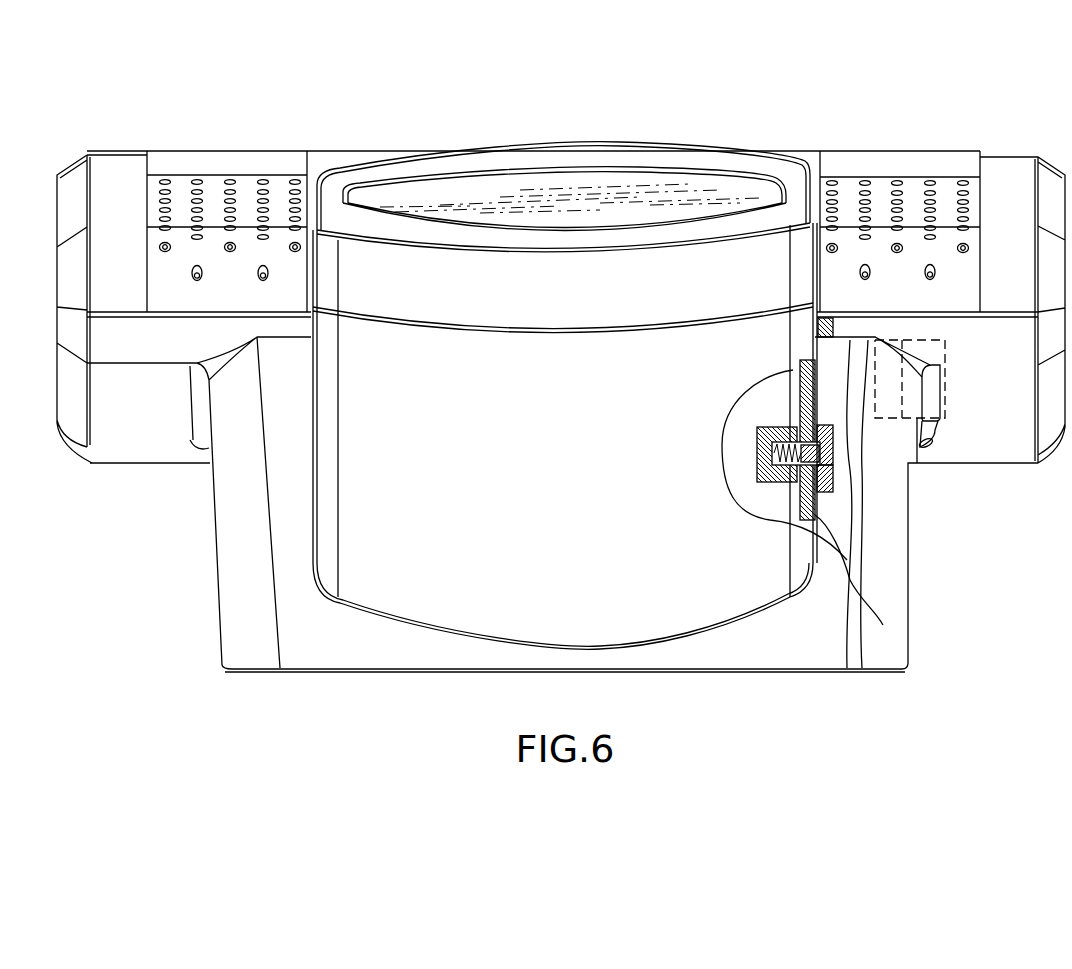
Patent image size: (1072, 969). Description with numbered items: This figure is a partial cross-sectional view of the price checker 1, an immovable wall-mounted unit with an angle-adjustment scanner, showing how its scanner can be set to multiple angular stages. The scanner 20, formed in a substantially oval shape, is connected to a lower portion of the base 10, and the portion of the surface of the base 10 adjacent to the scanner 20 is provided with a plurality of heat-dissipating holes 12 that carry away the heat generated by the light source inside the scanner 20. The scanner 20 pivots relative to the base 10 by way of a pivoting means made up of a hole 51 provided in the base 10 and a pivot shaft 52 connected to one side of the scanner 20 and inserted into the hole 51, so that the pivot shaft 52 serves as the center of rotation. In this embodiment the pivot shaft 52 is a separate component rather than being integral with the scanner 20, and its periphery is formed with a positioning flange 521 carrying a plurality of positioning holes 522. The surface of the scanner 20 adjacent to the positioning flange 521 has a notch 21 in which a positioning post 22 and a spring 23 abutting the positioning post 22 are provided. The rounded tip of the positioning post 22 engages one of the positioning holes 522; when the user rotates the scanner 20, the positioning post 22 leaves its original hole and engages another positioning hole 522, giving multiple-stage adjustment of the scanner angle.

The price checker 1 is at (556, 45).
The base 10 is at (948, 152).
The heat-dissipating holes 12 is at (197, 183).
The scanner 20 is at (550, 183).
The notch 21 is at (762, 484).
The positioning post 22 is at (843, 478).
The spring 23 is at (790, 483).
The hole 51 is at (948, 388).
The pivot shaft 52 is at (837, 385).
The positioning flange 521 is at (838, 452).
The positioning holes 522 is at (836, 470).